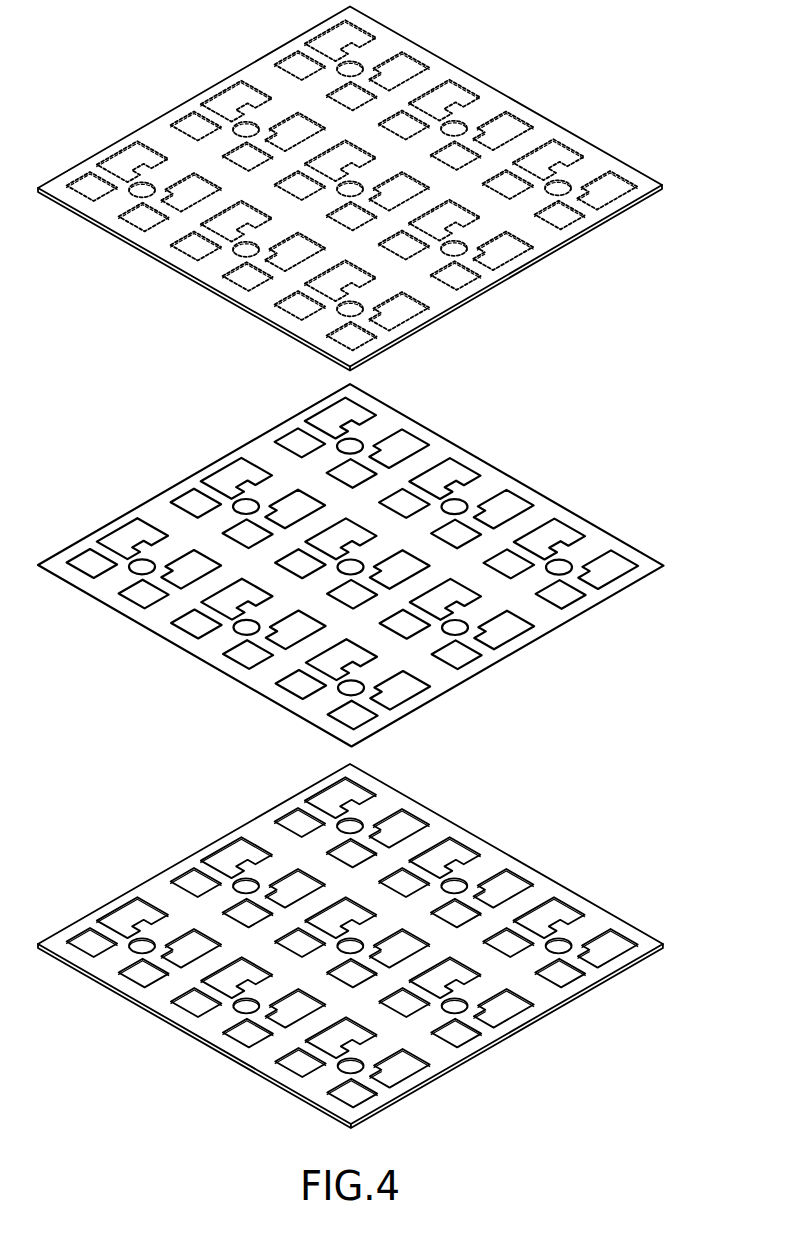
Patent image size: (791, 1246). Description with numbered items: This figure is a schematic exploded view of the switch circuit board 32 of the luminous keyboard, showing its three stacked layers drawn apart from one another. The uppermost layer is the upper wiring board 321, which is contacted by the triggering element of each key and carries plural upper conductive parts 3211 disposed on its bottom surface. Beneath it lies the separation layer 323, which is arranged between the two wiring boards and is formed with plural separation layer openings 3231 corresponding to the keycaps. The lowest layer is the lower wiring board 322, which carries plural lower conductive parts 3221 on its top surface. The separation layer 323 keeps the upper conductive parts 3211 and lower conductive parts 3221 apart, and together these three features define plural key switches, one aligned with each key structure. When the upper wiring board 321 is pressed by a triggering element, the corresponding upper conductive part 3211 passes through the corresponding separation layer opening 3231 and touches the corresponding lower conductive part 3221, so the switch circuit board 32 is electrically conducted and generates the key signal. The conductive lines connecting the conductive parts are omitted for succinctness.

The switch circuit board 32 is at (177, 41).
The upper wiring board 321 is at (544, 136).
The upper conductive parts 3211 is at (139, 190).
The separation layer 323 is at (544, 513).
The separation layer openings 3231 is at (139, 567).
The lower wiring board 322 is at (544, 892).
The lower conductive parts 3221 is at (139, 946).